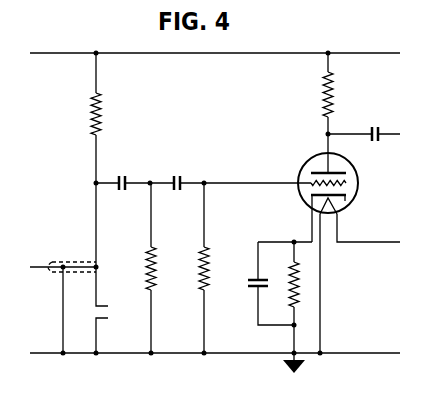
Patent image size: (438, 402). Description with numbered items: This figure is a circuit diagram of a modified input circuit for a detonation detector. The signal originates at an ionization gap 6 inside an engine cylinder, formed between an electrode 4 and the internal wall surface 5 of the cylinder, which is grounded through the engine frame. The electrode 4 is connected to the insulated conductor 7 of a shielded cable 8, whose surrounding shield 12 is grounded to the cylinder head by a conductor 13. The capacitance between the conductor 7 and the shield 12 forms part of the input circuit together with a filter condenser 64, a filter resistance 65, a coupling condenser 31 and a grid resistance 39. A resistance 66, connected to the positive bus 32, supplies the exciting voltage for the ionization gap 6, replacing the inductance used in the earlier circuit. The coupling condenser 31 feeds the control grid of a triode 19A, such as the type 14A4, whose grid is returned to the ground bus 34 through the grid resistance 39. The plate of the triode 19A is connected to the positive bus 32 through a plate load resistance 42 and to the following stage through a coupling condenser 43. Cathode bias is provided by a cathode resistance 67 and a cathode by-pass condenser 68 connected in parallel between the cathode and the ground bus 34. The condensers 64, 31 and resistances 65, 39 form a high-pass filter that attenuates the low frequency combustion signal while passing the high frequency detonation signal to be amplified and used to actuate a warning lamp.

The electrode 4 is at (104, 305).
The internal wall surface 5 is at (105, 317).
The ionization gap 6 is at (108, 311).
The insulated conductor 7 is at (40, 264).
The shielded cable 8 is at (63, 254).
The shield 12 is at (55, 273).
The conductor 13 is at (63, 310).
The triode 19A is at (360, 182).
The coupling condenser 31 is at (180, 174).
The positive bus 32 is at (245, 53).
The ground bus 34 is at (215, 354).
The grid resistance 39 is at (200, 257).
The plate load resistance 42 is at (334, 100).
The coupling condenser 43 is at (375, 126).
The filter condenser 64 is at (124, 174).
The filter resistance 65 is at (146, 261).
The resistance 66 is at (102, 113).
The cathode resistance 67 is at (291, 289).
The cathode by-pass condenser 68 is at (247, 282).